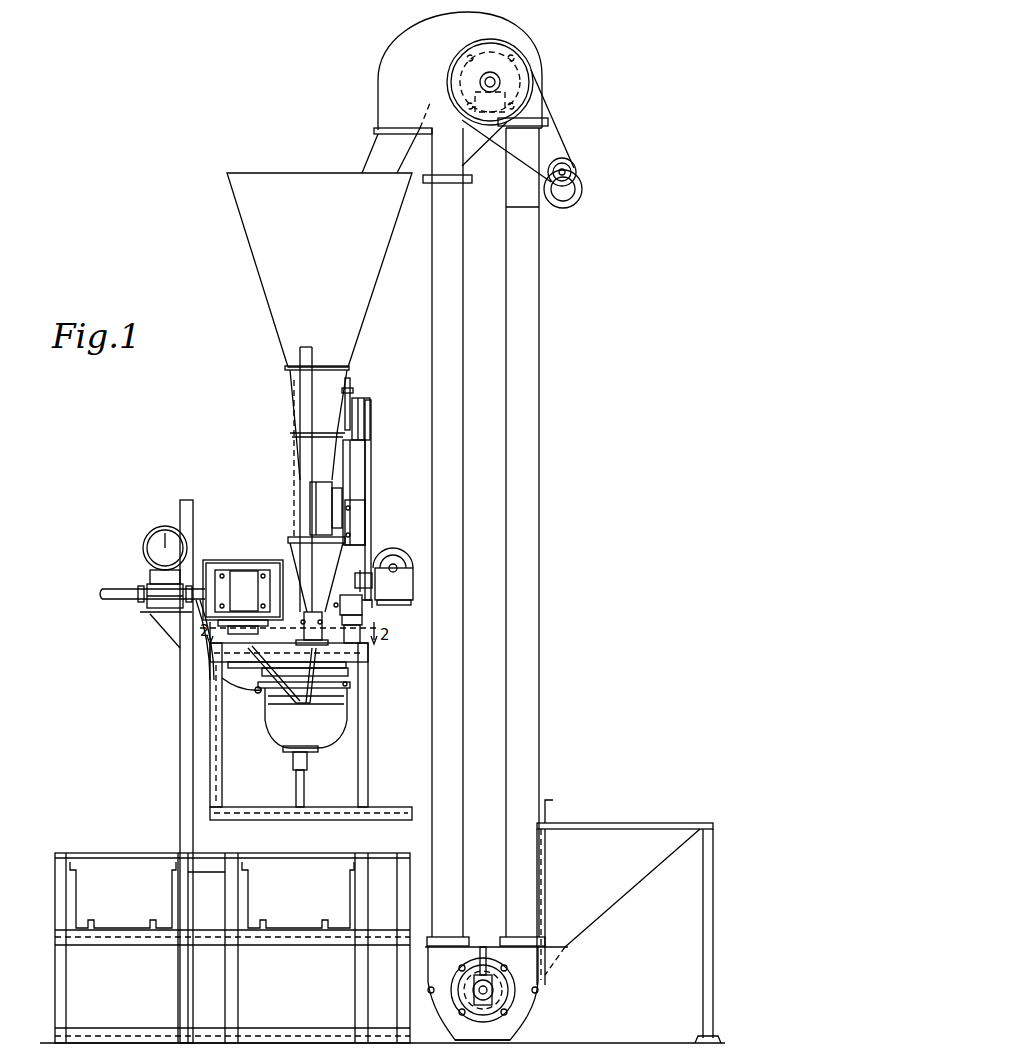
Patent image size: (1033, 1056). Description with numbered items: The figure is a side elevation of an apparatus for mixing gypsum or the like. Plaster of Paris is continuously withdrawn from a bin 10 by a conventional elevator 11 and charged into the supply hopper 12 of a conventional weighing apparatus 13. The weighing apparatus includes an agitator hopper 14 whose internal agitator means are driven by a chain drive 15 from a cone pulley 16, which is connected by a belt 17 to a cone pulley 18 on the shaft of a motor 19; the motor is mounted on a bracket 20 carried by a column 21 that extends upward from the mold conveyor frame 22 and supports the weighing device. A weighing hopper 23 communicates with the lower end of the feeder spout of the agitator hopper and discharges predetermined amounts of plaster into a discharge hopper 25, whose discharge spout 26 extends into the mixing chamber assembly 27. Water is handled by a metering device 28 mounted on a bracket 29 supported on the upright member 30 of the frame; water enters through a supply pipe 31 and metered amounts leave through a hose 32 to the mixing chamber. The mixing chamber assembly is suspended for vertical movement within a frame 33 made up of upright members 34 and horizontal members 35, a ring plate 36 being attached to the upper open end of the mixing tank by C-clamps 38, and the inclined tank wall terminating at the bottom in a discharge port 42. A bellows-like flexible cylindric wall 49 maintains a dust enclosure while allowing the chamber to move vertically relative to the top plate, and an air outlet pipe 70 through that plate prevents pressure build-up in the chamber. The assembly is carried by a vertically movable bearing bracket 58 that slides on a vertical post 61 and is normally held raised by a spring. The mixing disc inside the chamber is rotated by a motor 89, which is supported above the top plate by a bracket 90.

The bin 10 is at (638, 832).
The elevator 11 is at (530, 490).
The supply hopper 12 is at (334, 186).
The weighing apparatus 13 is at (345, 475).
The agitator hopper 14 is at (335, 378).
The chain drive 15 is at (352, 398).
The cone pulley 16 is at (371, 412).
The belt 17 is at (371, 522).
The cone pulley 18 is at (362, 575).
The motor 19 is at (413, 565).
The bracket 20 is at (372, 608).
The column 21 is at (366, 496).
The mold conveyor frame 22 is at (392, 890).
The weighing hopper 23 is at (320, 497).
The discharge hopper 25 is at (292, 545).
The discharge spout 26 is at (362, 620).
The mixing chamber assembly 27 is at (345, 712).
The water metering device 28 is at (145, 566).
The bracket 29 is at (160, 620).
The upright member 30 is at (180, 795).
The supply pipe 31 is at (112, 598).
The hose 32 is at (206, 656).
The frame 33 is at (218, 786).
The upright members 34 is at (210, 760).
The horizontal members 35 is at (345, 655).
The ring plate 36 is at (272, 688).
The C-clamps 38 is at (248, 690).
The discharge port 42 is at (290, 752).
The flexible cylindric wall 49 is at (350, 680).
The bearing bracket 58 is at (308, 760).
The vertical post 61 is at (305, 784).
The air outlet pipe 70 is at (305, 577).
The motor 89 is at (243, 580).
The bracket 90 is at (212, 560).